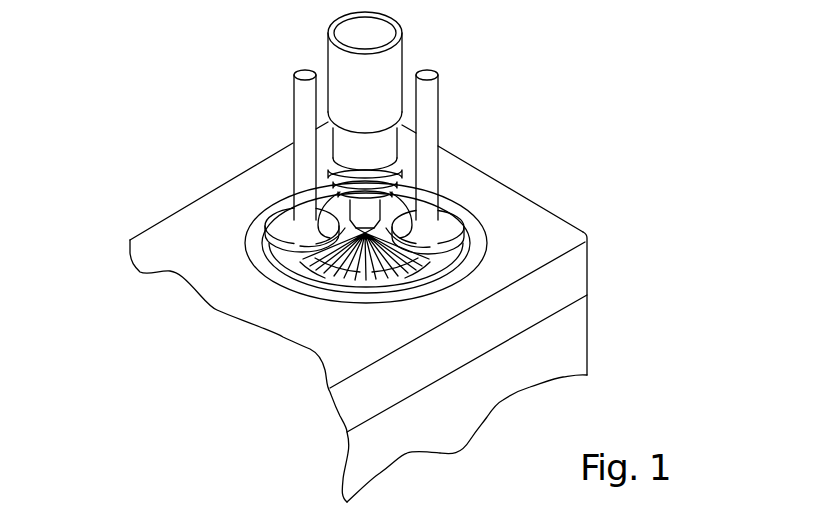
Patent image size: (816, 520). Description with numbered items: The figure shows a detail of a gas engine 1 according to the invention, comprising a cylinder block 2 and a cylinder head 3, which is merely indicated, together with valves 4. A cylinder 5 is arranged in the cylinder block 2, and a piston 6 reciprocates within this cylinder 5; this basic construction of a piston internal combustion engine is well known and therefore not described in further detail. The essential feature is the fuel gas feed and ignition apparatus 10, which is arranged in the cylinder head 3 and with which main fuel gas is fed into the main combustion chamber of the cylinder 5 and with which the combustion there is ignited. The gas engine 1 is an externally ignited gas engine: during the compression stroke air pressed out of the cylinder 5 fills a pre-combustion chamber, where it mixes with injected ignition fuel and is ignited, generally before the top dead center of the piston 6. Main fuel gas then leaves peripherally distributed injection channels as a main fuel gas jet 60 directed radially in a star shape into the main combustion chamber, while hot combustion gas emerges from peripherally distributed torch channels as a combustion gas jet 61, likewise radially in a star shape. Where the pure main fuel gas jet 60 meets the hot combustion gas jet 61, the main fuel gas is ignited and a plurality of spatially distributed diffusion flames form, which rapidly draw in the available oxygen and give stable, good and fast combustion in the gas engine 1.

The gas engine 1 is at (147, 130).
The cylinder block 2 is at (550, 355).
The cylinder head 3 is at (556, 178).
The valves 4 is at (305, 112).
The cylinder 5 is at (258, 208).
The piston 6 is at (463, 210).
The fuel gas feed and ignition apparatus 10 is at (387, 65).
The main fuel gas jet 60 is at (365, 285).
The combustion gas jet 61 is at (340, 277).